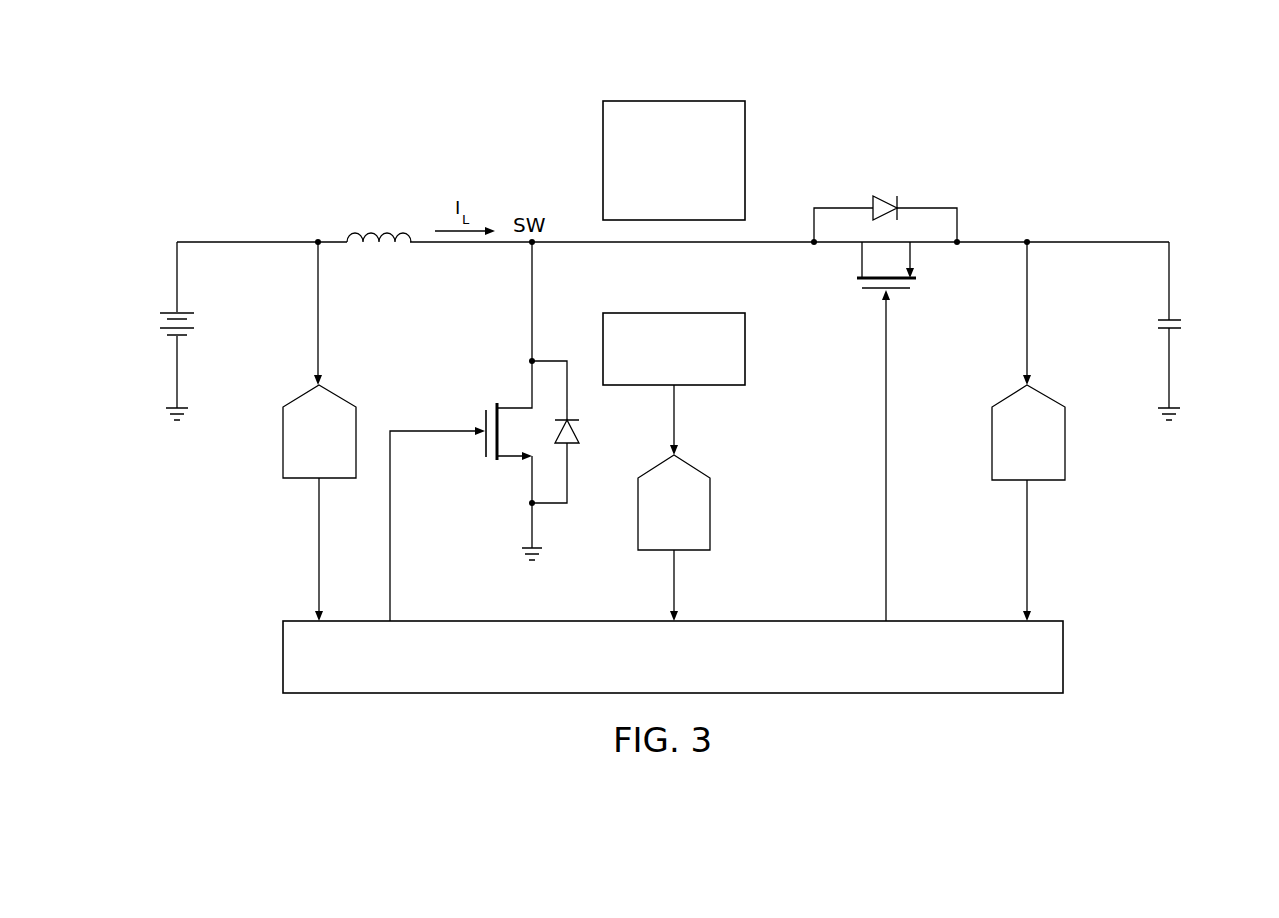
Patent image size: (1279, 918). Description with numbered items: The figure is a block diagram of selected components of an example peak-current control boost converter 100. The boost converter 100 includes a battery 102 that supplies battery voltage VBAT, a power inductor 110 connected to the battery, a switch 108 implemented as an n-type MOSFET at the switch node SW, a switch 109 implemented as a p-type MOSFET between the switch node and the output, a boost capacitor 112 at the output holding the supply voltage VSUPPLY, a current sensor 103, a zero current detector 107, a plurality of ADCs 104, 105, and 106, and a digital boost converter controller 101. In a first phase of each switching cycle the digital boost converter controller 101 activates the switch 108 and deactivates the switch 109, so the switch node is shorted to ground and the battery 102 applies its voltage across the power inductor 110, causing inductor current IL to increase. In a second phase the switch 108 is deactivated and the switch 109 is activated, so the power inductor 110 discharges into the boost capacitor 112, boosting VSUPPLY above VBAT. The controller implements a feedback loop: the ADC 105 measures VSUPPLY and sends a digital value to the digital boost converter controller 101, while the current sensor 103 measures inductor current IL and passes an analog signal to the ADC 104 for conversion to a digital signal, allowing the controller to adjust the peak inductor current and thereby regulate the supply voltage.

The peak-current control boost converter 100 is at (312, 103).
The digital boost converter controller 101 is at (1063, 657).
The battery 102 is at (158, 325).
The current sensor 103 is at (745, 348).
The ADC 104 is at (710, 515).
The ADC 105 is at (1065, 443).
The ADC 106 is at (283, 442).
The zero current detector 107 is at (676, 100).
The switch 108 is at (482, 447).
The switch 109 is at (898, 293).
The power inductor 110 is at (381, 234).
The boost capacitor 112 is at (1185, 326).